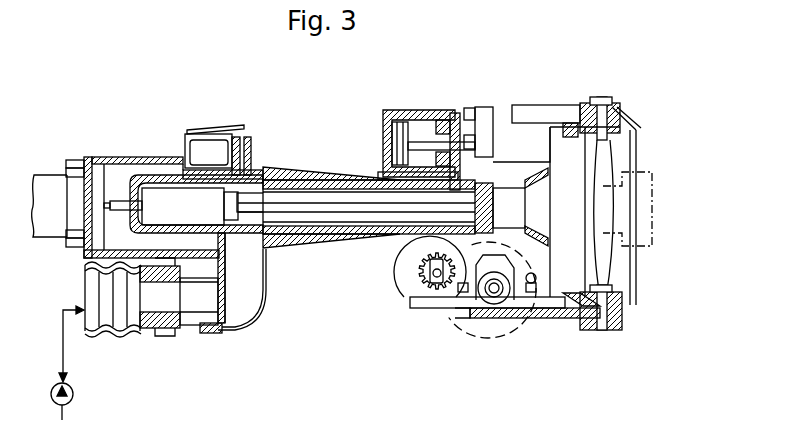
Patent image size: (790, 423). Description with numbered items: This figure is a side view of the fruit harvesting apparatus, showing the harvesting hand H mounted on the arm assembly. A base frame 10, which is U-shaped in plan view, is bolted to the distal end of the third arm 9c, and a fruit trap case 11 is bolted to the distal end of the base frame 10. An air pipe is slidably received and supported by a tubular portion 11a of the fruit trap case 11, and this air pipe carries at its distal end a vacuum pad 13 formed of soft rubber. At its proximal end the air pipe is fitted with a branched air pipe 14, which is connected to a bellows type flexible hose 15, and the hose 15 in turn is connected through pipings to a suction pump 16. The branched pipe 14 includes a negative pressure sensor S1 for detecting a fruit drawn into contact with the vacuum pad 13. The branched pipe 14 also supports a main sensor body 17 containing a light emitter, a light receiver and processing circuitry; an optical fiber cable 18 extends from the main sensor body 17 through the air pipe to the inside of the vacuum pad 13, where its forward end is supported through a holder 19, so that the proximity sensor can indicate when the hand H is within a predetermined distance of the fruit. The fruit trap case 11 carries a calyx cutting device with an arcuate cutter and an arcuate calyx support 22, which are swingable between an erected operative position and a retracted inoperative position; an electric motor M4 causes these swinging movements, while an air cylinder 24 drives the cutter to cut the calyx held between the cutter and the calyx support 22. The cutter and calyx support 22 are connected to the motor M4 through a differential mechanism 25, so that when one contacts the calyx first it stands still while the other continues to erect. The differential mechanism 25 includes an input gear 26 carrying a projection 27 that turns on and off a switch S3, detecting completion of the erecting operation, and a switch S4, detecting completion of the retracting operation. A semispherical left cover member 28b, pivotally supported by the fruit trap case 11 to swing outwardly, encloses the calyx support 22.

The third arm 9c is at (51, 230).
The base frame 10 is at (122, 156).
The main sensor body 17 is at (175, 195).
The negative pressure sensor S1 is at (207, 142).
The optical fiber cable 18 is at (315, 176).
The suction pump 16 is at (337, 229).
The bellows type flexible hose 15 is at (110, 332).
The branched air pipe 14 is at (246, 318).
The tubular portion 11a is at (388, 174).
The air cylinder 24 is at (414, 117).
The fruit trap case 11 is at (458, 112).
The holder 19 is at (488, 186).
The calyx support 22 is at (604, 154).
The vacuum pad 13 is at (551, 232).
The left cover member 28b is at (636, 272).
The projection 27 is at (627, 297).
The harvesting hand H is at (628, 356).
The differential mechanism 25 is at (485, 315).
The electric motor M4 is at (404, 279).
The input gear 26 is at (507, 323).
The switch S3 is at (463, 293).
The switch S4 is at (533, 293).